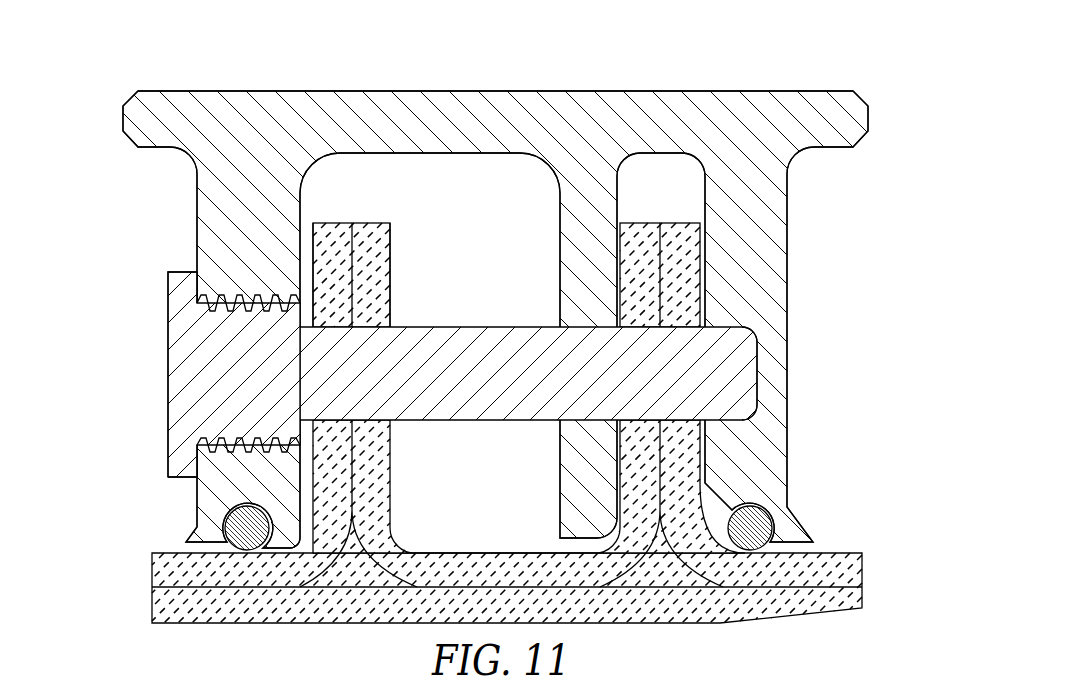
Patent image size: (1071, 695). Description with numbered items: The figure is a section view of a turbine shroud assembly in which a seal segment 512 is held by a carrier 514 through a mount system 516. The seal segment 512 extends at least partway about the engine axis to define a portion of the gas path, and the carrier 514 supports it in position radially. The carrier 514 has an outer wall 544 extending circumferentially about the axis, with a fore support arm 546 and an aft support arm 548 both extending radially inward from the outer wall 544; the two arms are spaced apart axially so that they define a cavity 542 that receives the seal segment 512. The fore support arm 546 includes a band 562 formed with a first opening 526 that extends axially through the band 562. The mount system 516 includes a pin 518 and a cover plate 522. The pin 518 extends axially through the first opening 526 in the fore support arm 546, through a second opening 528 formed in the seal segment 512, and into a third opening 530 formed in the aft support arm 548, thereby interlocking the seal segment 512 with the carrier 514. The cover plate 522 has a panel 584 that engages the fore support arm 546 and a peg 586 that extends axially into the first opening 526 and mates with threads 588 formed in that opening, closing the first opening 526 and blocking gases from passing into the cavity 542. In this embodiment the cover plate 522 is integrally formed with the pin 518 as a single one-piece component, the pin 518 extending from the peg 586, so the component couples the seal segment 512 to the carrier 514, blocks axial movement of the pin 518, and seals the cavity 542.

The seal segment 512 is at (150, 584).
The carrier 514 is at (480, 274).
The outer wall 544 is at (397, 90).
The cavity 542 is at (438, 176).
The fore support arm 546 is at (121, 187).
The band 562 is at (185, 226).
The aft support arm 548 is at (793, 365).
The mount system 516 is at (165, 363).
The cover plate 522 is at (176, 363).
The peg 586 is at (231, 290).
The threads 588 is at (237, 452).
The panel 584 is at (163, 373).
The pin 518 is at (418, 426).
The first opening 526 is at (303, 319).
The second opening 528 is at (585, 340).
The third opening 530 is at (724, 391).